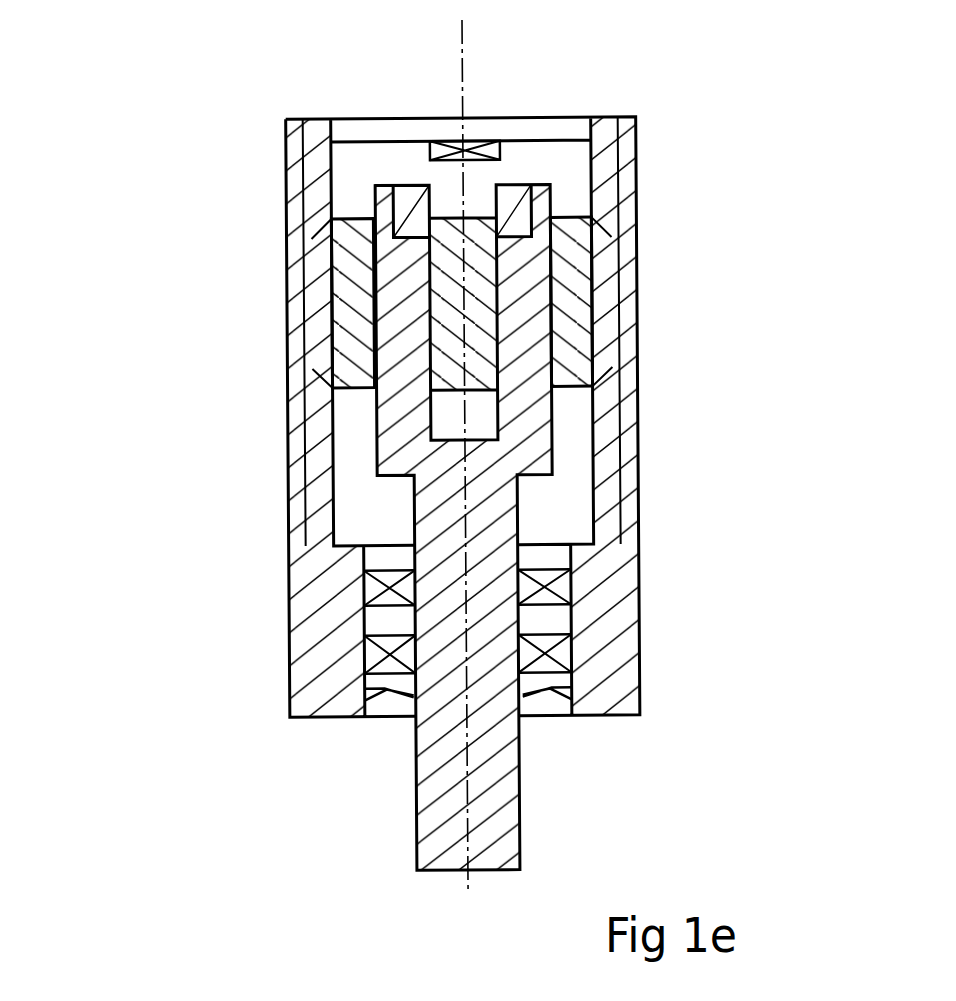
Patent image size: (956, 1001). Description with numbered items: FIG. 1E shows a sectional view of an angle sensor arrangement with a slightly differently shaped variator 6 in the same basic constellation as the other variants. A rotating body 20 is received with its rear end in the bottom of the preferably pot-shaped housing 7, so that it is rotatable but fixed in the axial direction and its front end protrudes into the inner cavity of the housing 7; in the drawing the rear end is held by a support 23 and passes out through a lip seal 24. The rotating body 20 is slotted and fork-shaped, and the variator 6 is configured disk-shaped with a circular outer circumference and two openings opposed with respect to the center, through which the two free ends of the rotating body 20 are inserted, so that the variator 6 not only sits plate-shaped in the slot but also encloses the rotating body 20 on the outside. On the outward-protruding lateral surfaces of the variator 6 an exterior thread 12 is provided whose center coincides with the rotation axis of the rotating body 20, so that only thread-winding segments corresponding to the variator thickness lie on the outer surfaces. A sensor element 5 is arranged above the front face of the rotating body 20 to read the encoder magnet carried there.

The sensor element 5 is at (435, 141).
The variator 6 is at (592, 210).
The housing 7 is at (640, 716).
The exterior thread 12 is at (603, 298).
The rotating body 20 is at (555, 443).
The support 23 is at (368, 590).
The lip seal 24 is at (363, 698).